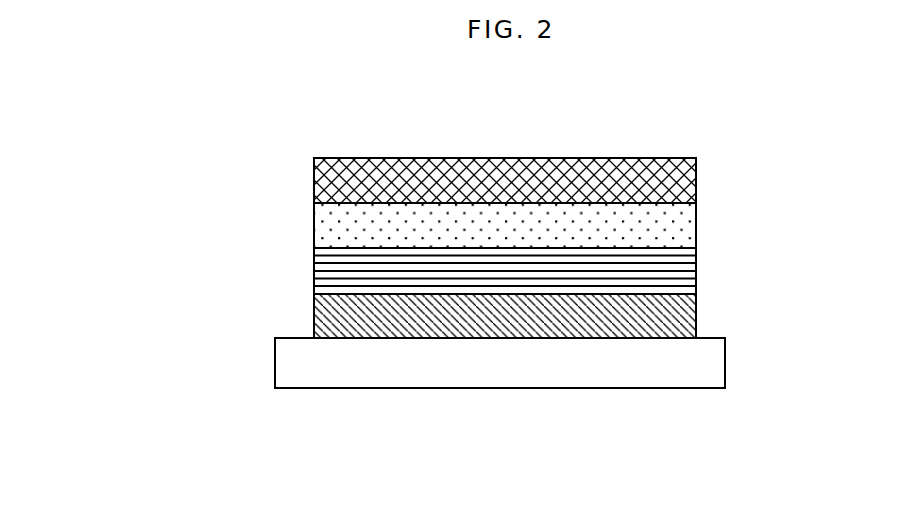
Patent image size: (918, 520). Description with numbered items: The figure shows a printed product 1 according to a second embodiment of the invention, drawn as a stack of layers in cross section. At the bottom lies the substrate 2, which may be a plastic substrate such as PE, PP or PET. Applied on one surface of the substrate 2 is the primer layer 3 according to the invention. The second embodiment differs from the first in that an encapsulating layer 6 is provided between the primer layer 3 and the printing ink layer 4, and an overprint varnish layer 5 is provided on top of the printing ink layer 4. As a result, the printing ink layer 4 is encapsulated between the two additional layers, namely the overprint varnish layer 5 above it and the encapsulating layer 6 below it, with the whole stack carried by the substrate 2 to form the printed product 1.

The printed product 1 is at (455, 319).
The substrate 2 is at (700, 367).
The primer layer 3 is at (696, 318).
The printing ink layer 4 is at (696, 228).
The overprint varnish layer 5 is at (696, 182).
The encapsulating layer 6 is at (696, 273).